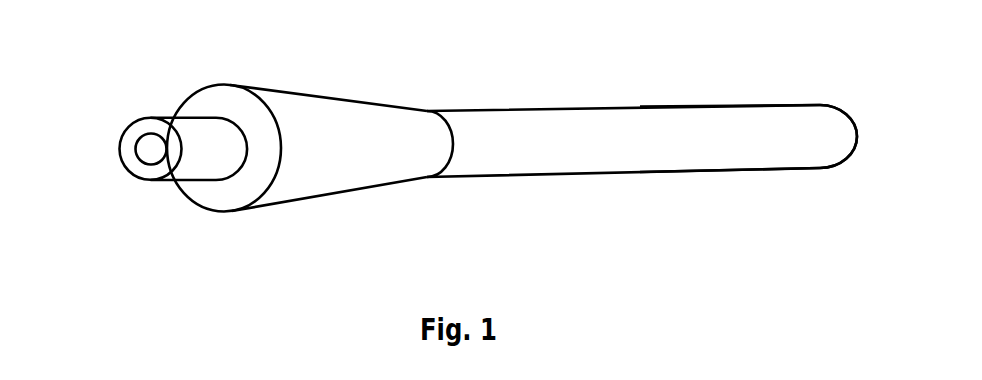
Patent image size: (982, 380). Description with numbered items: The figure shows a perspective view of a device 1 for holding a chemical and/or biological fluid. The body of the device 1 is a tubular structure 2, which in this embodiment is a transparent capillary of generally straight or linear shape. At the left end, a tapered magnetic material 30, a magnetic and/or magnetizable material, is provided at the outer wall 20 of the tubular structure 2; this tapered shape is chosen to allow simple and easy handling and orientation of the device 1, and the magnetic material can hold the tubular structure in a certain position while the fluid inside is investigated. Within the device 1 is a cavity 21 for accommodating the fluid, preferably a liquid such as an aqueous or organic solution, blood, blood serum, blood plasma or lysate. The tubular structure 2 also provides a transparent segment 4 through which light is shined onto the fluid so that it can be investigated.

The device 1 is at (457, 149).
The tubular structure 2 is at (573, 146).
The transparent segment 4 is at (703, 123).
The outer wall 20 is at (143, 127).
The cavity 21 is at (152, 148).
The magnetic material 30 is at (285, 182).